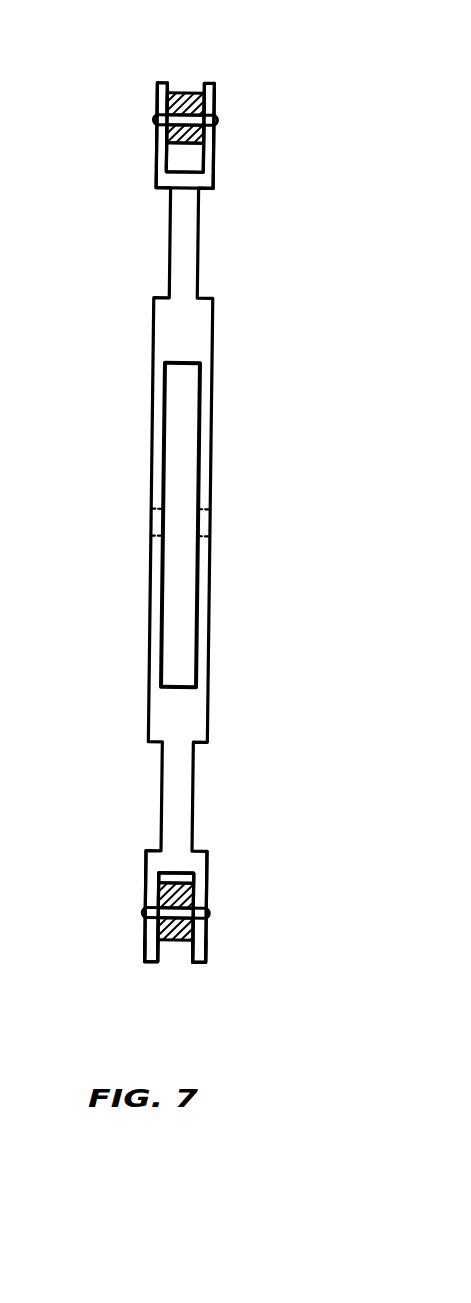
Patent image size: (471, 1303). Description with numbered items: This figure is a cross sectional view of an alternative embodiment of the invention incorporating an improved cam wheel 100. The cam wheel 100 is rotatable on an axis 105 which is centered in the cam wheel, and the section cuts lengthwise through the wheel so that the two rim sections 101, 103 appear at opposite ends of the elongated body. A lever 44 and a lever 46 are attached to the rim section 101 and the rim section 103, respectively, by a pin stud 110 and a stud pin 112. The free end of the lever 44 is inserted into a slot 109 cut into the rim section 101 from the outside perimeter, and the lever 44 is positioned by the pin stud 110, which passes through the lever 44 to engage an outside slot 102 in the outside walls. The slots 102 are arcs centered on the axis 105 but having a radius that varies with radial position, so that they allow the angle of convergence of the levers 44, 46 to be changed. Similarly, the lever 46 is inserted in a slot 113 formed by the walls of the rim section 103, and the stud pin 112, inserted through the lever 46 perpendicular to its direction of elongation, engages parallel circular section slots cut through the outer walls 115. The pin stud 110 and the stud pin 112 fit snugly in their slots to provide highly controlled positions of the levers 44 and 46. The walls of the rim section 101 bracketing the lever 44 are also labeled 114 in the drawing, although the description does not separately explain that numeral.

The lever 44 is at (187, 93).
The lever 46 is at (187, 893).
The cam wheel 100 is at (213, 323).
The rim section 101 is at (215, 177).
The outside slot 102 is at (210, 120).
The rim section 103 is at (200, 962).
The axis 105 is at (209, 520).
The slot 109 is at (178, 160).
The pin stud 110 is at (216, 127).
The stud pin 112 is at (207, 915).
The slot 113 is at (160, 882).
The upper clevis arms 114 is at (162, 84).
The outer walls 115 is at (188, 952).